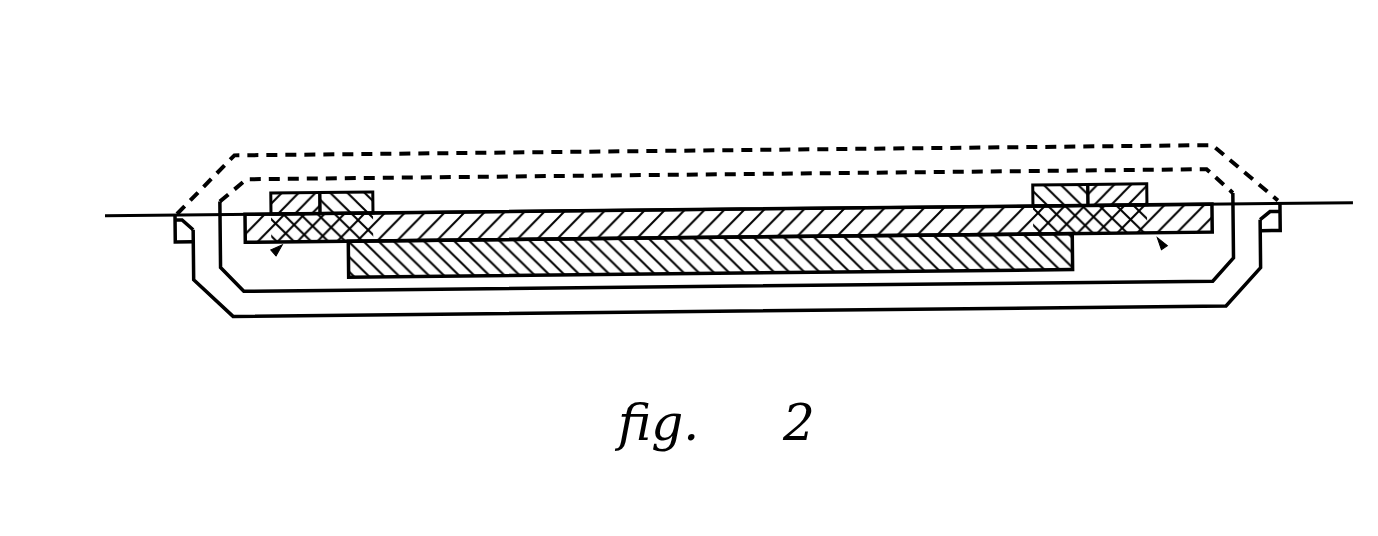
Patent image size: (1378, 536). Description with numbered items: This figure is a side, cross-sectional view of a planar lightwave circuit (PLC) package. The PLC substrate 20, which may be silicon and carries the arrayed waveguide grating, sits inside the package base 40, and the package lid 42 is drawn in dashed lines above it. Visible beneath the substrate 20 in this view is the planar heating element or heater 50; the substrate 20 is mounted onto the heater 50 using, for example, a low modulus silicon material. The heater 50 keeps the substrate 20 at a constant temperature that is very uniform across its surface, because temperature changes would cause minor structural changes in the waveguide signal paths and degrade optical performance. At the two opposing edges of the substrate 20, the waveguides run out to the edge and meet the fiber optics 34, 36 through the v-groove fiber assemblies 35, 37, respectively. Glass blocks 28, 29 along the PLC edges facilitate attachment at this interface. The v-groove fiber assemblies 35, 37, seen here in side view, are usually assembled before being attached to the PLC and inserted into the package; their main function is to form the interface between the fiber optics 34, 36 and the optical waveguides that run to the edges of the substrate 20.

The PLC substrate 20 is at (793, 215).
The glass block 28 is at (378, 199).
The glass block 29 is at (1030, 205).
The fiber optics 34 is at (115, 215).
The fiber optics 36 is at (1337, 215).
The v-groove fiber assembly 35 is at (282, 246).
The v-groove fiber assembly 37 is at (1157, 248).
The package base 40 is at (977, 303).
The package lid 42 is at (1125, 167).
The heater 50 is at (527, 266).